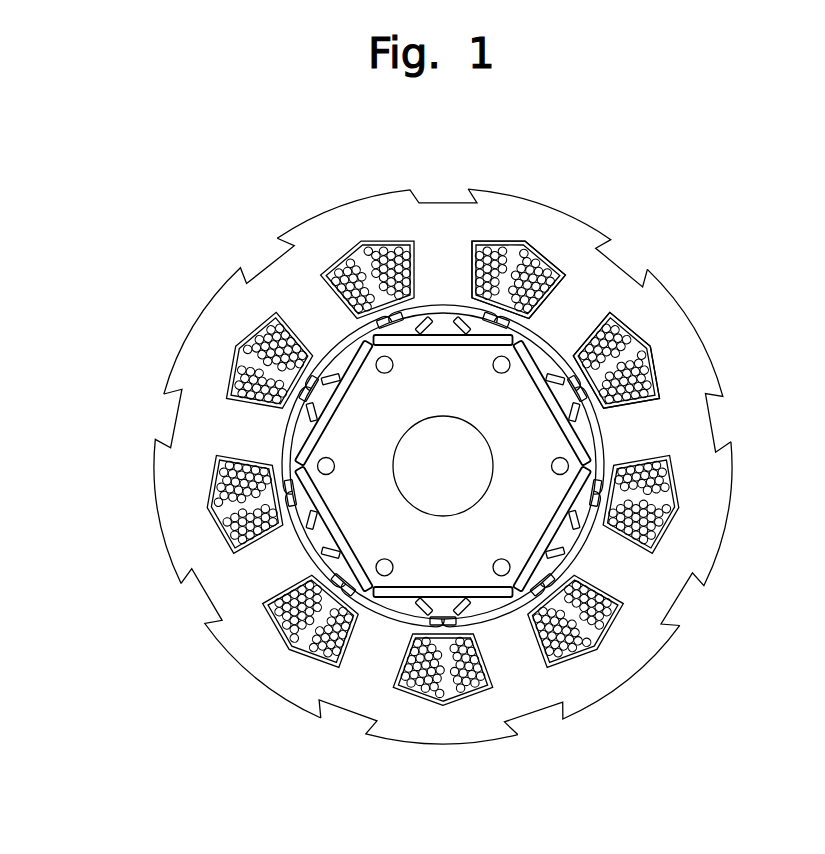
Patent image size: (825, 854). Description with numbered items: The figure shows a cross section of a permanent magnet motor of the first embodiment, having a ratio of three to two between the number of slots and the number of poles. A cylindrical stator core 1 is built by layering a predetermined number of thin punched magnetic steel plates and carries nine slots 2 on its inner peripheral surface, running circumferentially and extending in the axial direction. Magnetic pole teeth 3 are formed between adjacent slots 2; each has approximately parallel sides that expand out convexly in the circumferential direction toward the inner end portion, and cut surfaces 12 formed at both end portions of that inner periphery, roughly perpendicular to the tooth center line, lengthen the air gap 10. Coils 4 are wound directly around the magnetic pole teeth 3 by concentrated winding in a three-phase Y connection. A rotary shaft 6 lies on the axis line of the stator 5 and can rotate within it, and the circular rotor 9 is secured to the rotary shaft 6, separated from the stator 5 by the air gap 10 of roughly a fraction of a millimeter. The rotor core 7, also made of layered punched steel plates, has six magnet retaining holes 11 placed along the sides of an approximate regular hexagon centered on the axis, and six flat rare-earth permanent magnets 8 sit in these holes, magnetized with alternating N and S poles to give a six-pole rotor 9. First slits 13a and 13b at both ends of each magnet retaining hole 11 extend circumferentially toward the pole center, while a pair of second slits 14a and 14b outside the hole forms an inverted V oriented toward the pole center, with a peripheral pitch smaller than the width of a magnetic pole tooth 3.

The stator core 1 is at (443, 412).
The slots 2 is at (443, 421).
The magnetic pole teeth 3 is at (577, 307).
The coils 4 is at (496, 506).
The stator 5 is at (735, 522).
The rotary shaft 6 is at (526, 533).
The rotor core 7 is at (409, 715).
The permanent magnets 8 is at (443, 466).
The rotor 9 is at (371, 505).
The air gap 10 is at (358, 488).
The magnet retaining holes 11 is at (332, 468).
The cut surfaces 12 is at (443, 468).
The first slit 13a is at (330, 250).
The first slit 13b is at (511, 219).
The second slit 14a is at (425, 364).
The second slit 14b is at (470, 364).